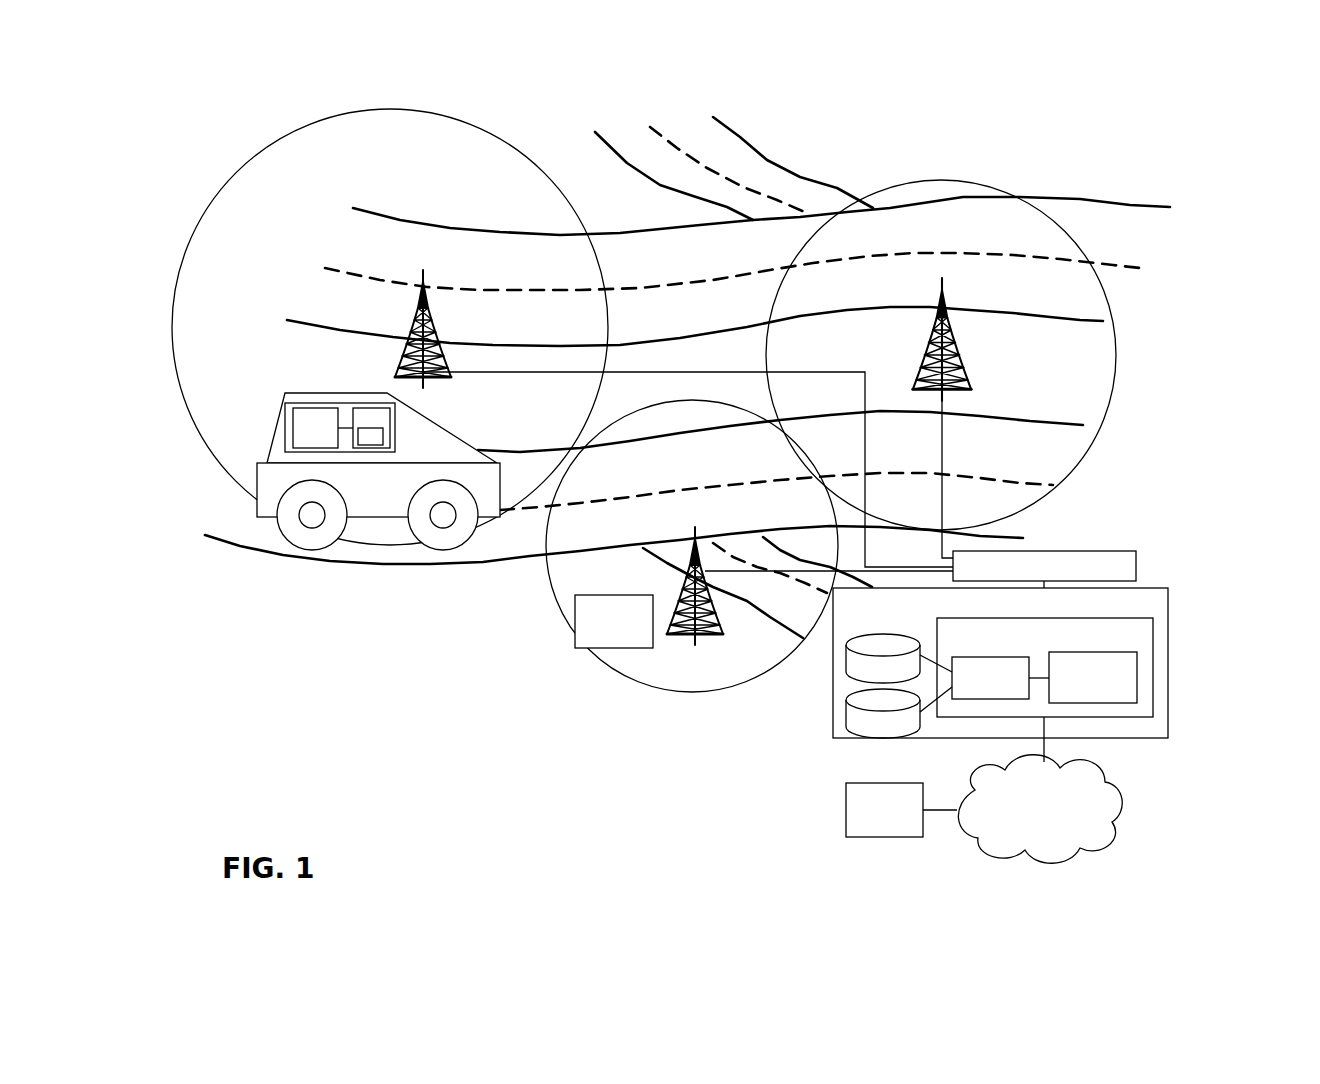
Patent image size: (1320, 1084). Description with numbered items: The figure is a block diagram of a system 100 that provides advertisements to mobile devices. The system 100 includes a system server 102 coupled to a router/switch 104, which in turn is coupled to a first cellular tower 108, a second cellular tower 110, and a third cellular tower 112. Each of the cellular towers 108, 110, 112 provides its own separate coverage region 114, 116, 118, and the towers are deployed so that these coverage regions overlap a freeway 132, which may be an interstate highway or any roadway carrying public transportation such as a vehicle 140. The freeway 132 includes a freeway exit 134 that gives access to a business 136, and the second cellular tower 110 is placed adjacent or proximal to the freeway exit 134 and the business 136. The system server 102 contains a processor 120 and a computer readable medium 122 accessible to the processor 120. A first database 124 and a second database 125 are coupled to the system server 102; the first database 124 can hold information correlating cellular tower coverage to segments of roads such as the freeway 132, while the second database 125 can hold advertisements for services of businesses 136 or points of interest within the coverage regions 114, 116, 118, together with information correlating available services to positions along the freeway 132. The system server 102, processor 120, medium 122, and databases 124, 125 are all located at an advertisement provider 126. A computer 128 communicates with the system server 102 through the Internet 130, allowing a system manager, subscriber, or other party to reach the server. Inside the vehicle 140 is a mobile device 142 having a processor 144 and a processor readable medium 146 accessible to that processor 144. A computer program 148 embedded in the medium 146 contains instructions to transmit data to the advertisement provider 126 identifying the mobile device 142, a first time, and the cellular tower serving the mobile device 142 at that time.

The system 100 is at (1162, 180).
The system server 102 is at (1029, 699).
The router/switch 104 is at (1104, 580).
The first cellular tower 108 is at (365, 329).
The second cellular tower 110 is at (645, 586).
The third cellular tower 112 is at (907, 339).
The first coverage region 114 is at (390, 308).
The second coverage region 116 is at (620, 546).
The third coverage region 118 is at (941, 337).
The processor 120 is at (907, 718).
The computer readable medium 122 is at (1161, 687).
The first database 124 is at (820, 673).
The second database 125 is at (820, 727).
The advertisement provider 126 is at (997, 686).
The computer 128 is at (821, 819).
The Internet 130 is at (1107, 809).
The freeway 132 is at (591, 562).
The freeway exit 134 is at (723, 609).
The business 136 is at (584, 654).
The vehicle 140 is at (343, 471).
The mobile device 142 is at (356, 428).
The processor 144 is at (267, 423).
The processor readable medium 146 is at (425, 420).
The computer program 148 is at (404, 445).